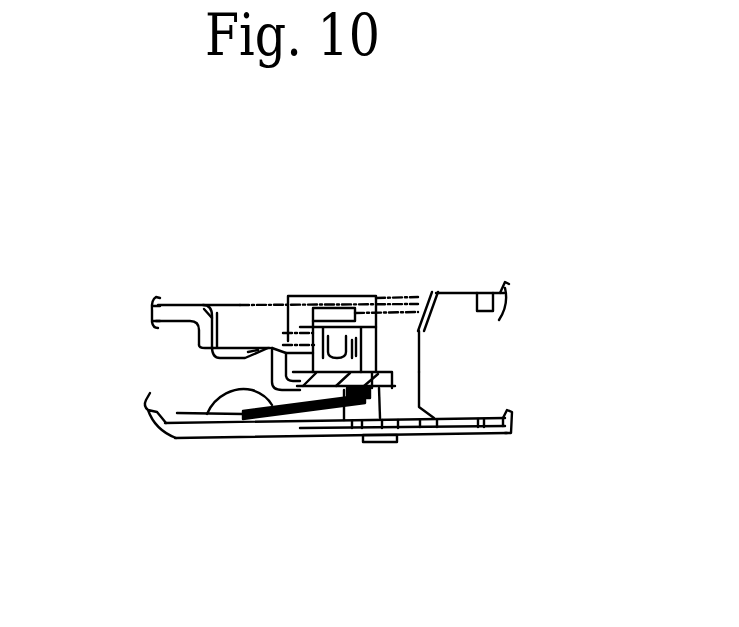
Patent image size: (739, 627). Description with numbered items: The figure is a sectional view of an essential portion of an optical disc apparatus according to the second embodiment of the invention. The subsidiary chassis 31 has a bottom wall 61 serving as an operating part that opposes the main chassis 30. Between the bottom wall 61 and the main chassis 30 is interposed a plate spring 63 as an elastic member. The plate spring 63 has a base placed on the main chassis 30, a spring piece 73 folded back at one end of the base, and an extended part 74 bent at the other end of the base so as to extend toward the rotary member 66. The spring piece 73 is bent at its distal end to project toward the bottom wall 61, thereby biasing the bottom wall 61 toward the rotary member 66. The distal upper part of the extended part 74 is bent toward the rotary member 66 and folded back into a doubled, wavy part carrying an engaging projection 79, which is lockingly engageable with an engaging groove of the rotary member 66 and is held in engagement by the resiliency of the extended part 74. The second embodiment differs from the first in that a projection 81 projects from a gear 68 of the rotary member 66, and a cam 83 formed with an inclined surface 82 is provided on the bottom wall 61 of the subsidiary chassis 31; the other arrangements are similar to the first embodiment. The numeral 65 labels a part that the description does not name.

The main chassis 30 is at (469, 437).
The subsidiary chassis 31 is at (161, 298).
The bottom wall 61 is at (380, 433).
The plate spring 63 is at (443, 430).
The slider body 65 is at (360, 300).
The rotary member 66 is at (268, 303).
The gear 68 is at (287, 300).
The spring piece 73 is at (210, 412).
The extended part 74 is at (427, 382).
The engaging projection 79 is at (417, 292).
The projection 81 is at (217, 363).
The inclined surface 82 is at (427, 350).
The cam 83 is at (337, 433).